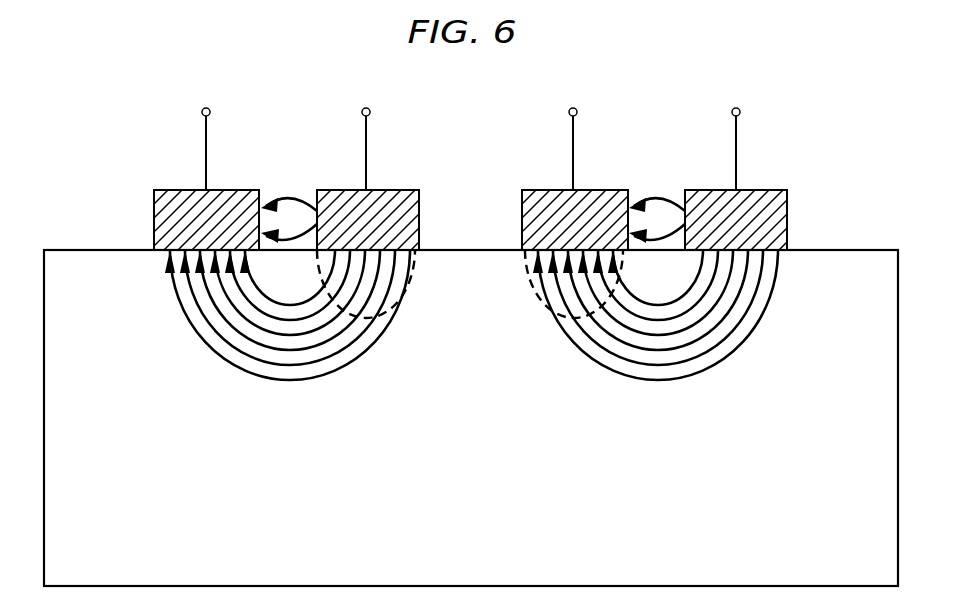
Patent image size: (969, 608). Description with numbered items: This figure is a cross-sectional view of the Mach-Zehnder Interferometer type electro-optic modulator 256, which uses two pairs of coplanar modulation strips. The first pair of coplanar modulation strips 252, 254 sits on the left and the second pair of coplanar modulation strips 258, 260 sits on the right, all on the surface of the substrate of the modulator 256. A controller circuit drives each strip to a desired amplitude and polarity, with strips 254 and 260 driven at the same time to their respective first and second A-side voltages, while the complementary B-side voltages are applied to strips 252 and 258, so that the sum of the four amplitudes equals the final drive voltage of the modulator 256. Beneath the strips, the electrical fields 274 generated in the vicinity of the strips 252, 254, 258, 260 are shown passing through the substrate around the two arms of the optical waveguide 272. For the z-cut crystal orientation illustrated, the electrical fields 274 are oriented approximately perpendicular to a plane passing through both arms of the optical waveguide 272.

The coplanar modulation strip 252 is at (165, 192).
The coplanar modulation strip 254 is at (393, 190).
The Mach-Zehnder Interferometer type modulator 256 is at (833, 249).
The coplanar modulation strip 258 is at (540, 192).
The coplanar modulation strip 260 is at (767, 190).
The optical waveguide 272 is at (413, 293).
The electrical fields 274 is at (287, 197).